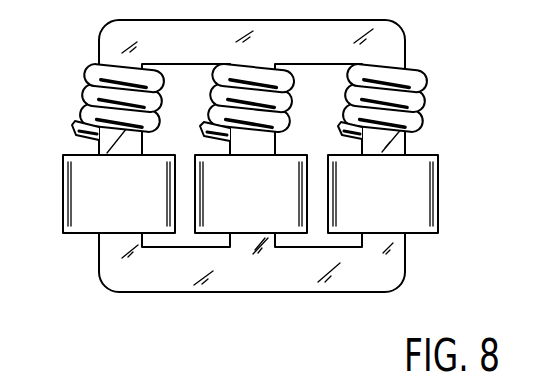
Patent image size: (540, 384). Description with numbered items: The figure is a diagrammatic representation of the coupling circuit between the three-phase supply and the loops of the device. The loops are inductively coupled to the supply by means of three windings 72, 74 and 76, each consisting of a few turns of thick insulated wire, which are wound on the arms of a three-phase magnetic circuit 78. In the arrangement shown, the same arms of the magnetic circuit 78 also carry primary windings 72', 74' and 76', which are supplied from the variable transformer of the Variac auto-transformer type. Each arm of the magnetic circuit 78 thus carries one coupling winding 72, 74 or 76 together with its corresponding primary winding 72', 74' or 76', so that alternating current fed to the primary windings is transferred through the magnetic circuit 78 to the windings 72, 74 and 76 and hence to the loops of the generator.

The winding 72 is at (101, 88).
The winding 74 is at (264, 102).
The winding 76 is at (405, 89).
The three-phase magnetic circuit 78 is at (135, 272).
The primary winding 72' is at (119, 194).
The primary winding 74' is at (251, 194).
The primary winding 76' is at (383, 194).